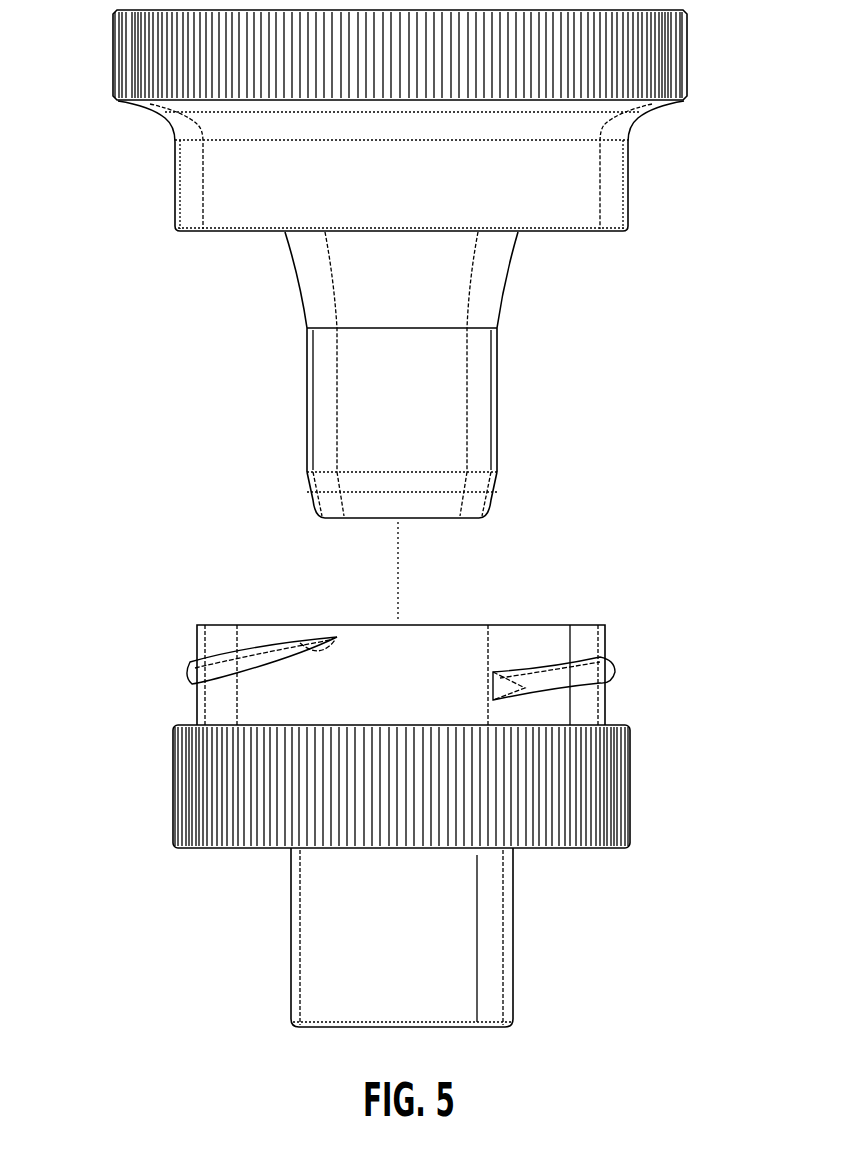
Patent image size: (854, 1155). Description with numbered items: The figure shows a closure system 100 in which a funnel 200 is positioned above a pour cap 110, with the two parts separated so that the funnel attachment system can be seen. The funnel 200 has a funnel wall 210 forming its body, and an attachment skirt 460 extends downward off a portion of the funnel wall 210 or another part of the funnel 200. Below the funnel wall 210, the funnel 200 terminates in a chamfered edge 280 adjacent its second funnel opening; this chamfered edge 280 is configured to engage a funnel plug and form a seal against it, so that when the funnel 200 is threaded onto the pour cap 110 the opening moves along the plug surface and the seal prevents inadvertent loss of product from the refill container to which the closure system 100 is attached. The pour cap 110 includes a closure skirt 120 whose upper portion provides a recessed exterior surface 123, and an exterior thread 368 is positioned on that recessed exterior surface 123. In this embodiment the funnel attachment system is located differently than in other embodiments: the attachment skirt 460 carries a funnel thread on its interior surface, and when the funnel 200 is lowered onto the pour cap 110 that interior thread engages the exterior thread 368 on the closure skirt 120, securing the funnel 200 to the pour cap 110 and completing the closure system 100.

The closure system 100 is at (130, 353).
The pour cap 110 is at (116, 862).
The closure skirt 120 is at (220, 752).
The recessed exterior surface 123 is at (161, 690).
The funnel 200 is at (706, 245).
The funnel wall 210 is at (458, 384).
The chamfered edge 280 is at (511, 497).
The exterior thread 368 is at (603, 670).
The attachment skirt 460 is at (193, 172).